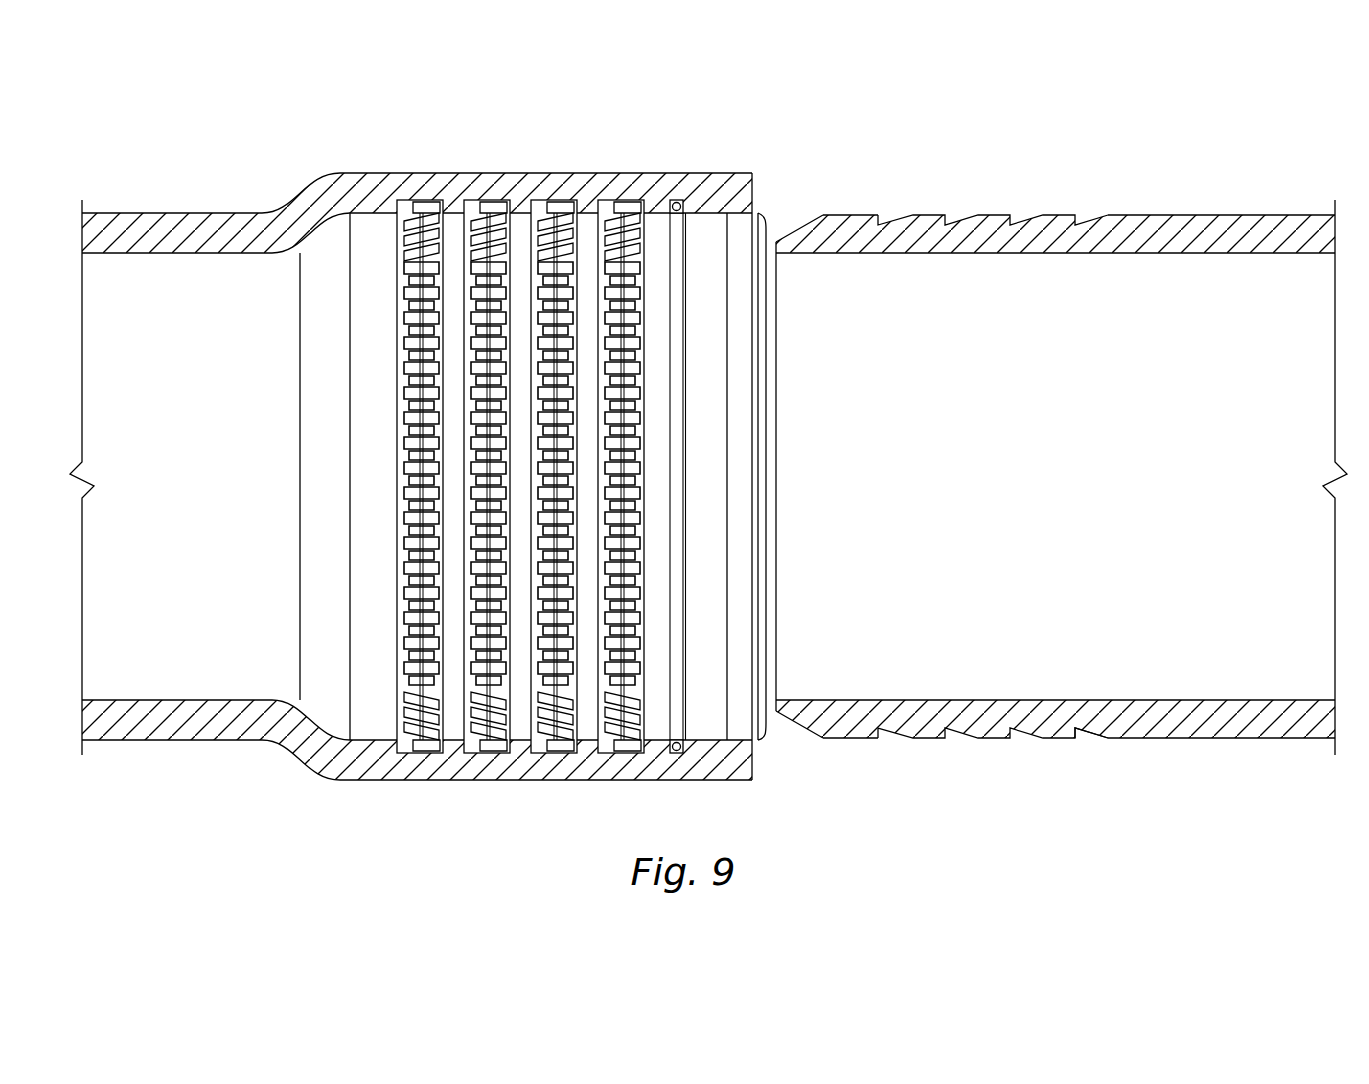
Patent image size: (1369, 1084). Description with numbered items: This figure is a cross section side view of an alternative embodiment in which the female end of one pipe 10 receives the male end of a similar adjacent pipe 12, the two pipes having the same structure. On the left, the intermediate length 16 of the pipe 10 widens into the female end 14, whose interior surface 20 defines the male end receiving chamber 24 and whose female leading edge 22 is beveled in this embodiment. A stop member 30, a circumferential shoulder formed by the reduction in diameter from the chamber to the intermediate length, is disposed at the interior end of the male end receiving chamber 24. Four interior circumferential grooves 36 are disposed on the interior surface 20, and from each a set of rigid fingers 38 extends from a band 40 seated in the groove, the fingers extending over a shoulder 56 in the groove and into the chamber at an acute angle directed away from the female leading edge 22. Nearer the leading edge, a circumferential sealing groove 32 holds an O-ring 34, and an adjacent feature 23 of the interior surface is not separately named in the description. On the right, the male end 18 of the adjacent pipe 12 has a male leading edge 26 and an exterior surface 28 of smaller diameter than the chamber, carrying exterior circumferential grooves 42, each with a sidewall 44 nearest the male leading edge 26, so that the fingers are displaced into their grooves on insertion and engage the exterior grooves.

The pipe 10 is at (185, 154).
The similar adjacent pipe 12 is at (1060, 471).
The female end 14 is at (434, 478).
The intermediate length 16 is at (142, 212).
The male end 18 is at (1045, 476).
The interior surface 20 is at (692, 476).
The female leading edge 22 is at (754, 188).
The bore shoulder 23 is at (727, 300).
The male end receiving chamber 24 is at (766, 452).
The male leading edge 26 is at (803, 230).
The exterior surface 28 is at (1079, 502).
The stop member 30 is at (311, 235).
The circumferential sealing groove 32 is at (688, 200).
The O-ring 34 is at (683, 333).
The interior circumferential grooves 36 is at (499, 478).
The rigid fingers 38 is at (497, 430).
The band 40 is at (487, 200).
The exterior circumferential grooves 42 is at (991, 525).
The sidewall 44 is at (1058, 756).
The shoulder 56 is at (604, 197).